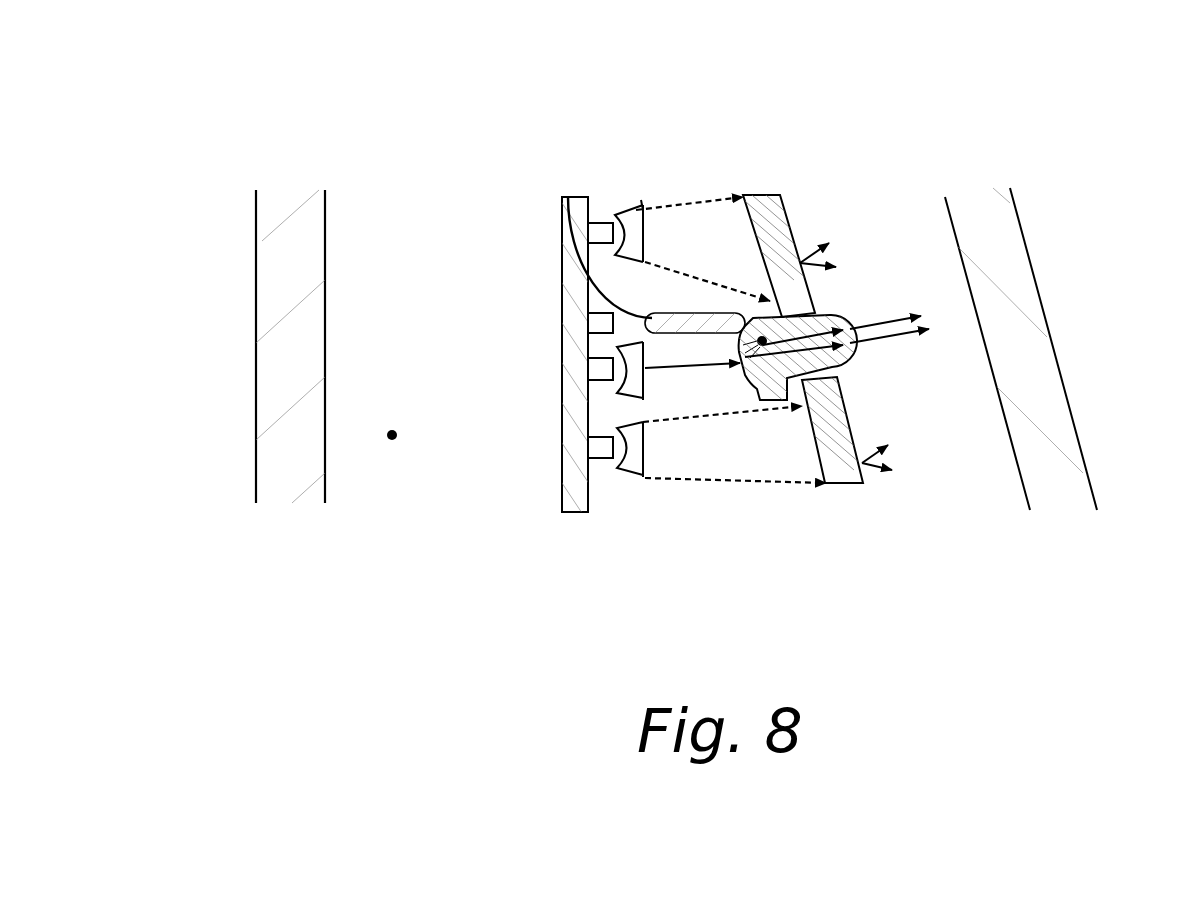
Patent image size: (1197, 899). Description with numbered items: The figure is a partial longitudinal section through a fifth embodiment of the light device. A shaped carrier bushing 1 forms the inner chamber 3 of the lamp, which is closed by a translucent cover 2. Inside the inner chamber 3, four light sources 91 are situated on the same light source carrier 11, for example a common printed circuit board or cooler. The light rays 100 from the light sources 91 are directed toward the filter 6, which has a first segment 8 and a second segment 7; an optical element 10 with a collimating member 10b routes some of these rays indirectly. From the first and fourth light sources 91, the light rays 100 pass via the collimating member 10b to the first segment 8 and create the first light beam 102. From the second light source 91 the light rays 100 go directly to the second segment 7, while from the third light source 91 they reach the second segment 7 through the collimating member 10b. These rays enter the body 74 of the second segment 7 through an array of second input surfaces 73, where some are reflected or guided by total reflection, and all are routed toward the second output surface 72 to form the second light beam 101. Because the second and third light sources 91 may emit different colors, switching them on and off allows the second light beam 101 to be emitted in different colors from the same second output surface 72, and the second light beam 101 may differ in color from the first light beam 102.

The carrier bushing 1 is at (248, 415).
The translucent cover 2 is at (1052, 334).
The inner chamber 3 is at (392, 440).
The filter 6 is at (782, 180).
The second segment 7 is at (840, 313).
The first segment 8 is at (845, 487).
The optical element 10 is at (610, 392).
The collimating member 10b is at (642, 205).
The light source carrier 11 is at (560, 283).
The second output surface 72 is at (852, 350).
The second input surface 73 is at (571, 197).
The body 74 is at (758, 338).
The light source 91 is at (595, 322).
The light ray 100 is at (647, 262).
The second light beam 101 is at (920, 310).
The first light beam 102 is at (820, 237).